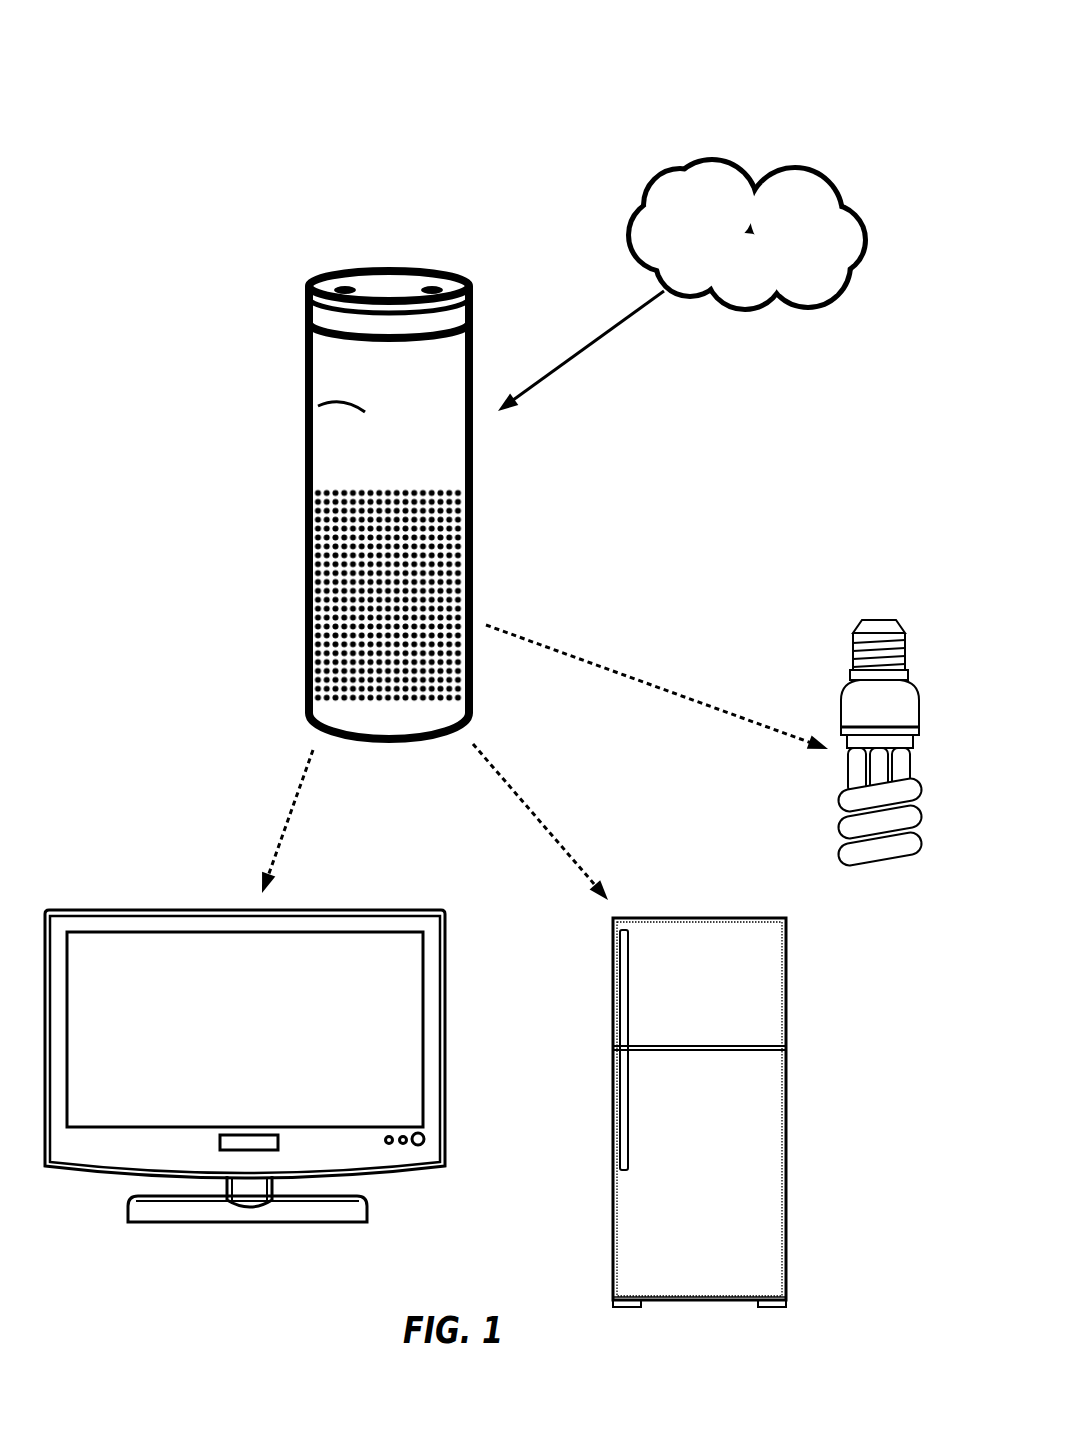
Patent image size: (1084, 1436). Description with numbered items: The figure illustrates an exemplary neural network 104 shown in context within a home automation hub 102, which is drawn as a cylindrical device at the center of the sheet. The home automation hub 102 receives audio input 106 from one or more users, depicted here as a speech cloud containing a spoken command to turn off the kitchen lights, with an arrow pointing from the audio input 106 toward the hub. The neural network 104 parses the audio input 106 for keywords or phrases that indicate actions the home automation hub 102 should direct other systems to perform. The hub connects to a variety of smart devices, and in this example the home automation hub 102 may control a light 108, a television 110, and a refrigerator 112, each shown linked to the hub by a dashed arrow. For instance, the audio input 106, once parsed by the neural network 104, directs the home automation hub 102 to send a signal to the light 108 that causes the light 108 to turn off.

The home automation hub 102 is at (314, 276).
The neural network 104 is at (312, 408).
The audio input 106 is at (760, 154).
The light 108 is at (880, 620).
The television 110 is at (150, 909).
The refrigerator 112 is at (787, 1030).